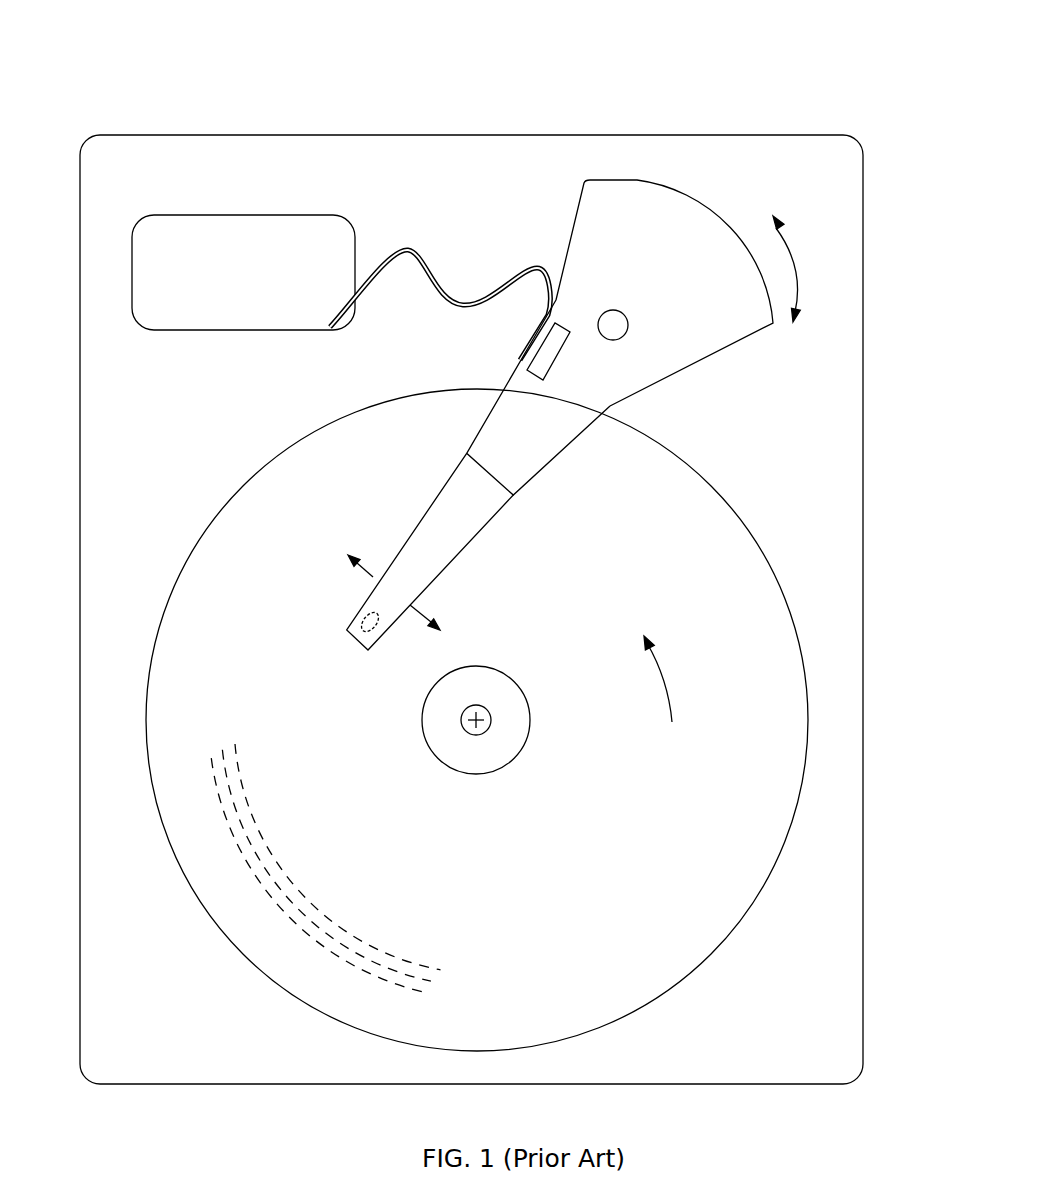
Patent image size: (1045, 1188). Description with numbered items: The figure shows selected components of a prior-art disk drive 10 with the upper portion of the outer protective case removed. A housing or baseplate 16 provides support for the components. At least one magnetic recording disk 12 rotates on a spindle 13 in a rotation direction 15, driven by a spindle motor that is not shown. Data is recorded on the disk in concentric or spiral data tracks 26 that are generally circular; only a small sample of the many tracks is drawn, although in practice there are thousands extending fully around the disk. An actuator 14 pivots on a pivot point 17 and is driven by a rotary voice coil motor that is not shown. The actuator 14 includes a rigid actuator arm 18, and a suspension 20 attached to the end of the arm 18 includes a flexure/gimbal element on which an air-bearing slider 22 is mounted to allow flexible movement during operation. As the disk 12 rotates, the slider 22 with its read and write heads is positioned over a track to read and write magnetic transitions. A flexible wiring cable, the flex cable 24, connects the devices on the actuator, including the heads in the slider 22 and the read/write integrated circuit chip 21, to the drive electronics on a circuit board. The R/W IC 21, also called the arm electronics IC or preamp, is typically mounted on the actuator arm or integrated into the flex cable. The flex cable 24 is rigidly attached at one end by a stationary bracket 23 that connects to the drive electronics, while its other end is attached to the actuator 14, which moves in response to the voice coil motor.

The disk drive 10 is at (479, 546).
The magnetic recording disk 12 is at (718, 500).
The spindle 13 is at (492, 722).
The actuator 14 is at (722, 212).
The direction 15 is at (710, 676).
The baseplate 16 is at (258, 70).
The pivot point 17 is at (613, 313).
The actuator arm 18 is at (562, 443).
The suspension 20 is at (425, 527).
The read/write integrated circuit chip 21 is at (557, 357).
The slider 22 is at (357, 642).
The bracket 23 is at (232, 220).
The flex cable 24 is at (493, 288).
The data tracks 26 is at (418, 992).